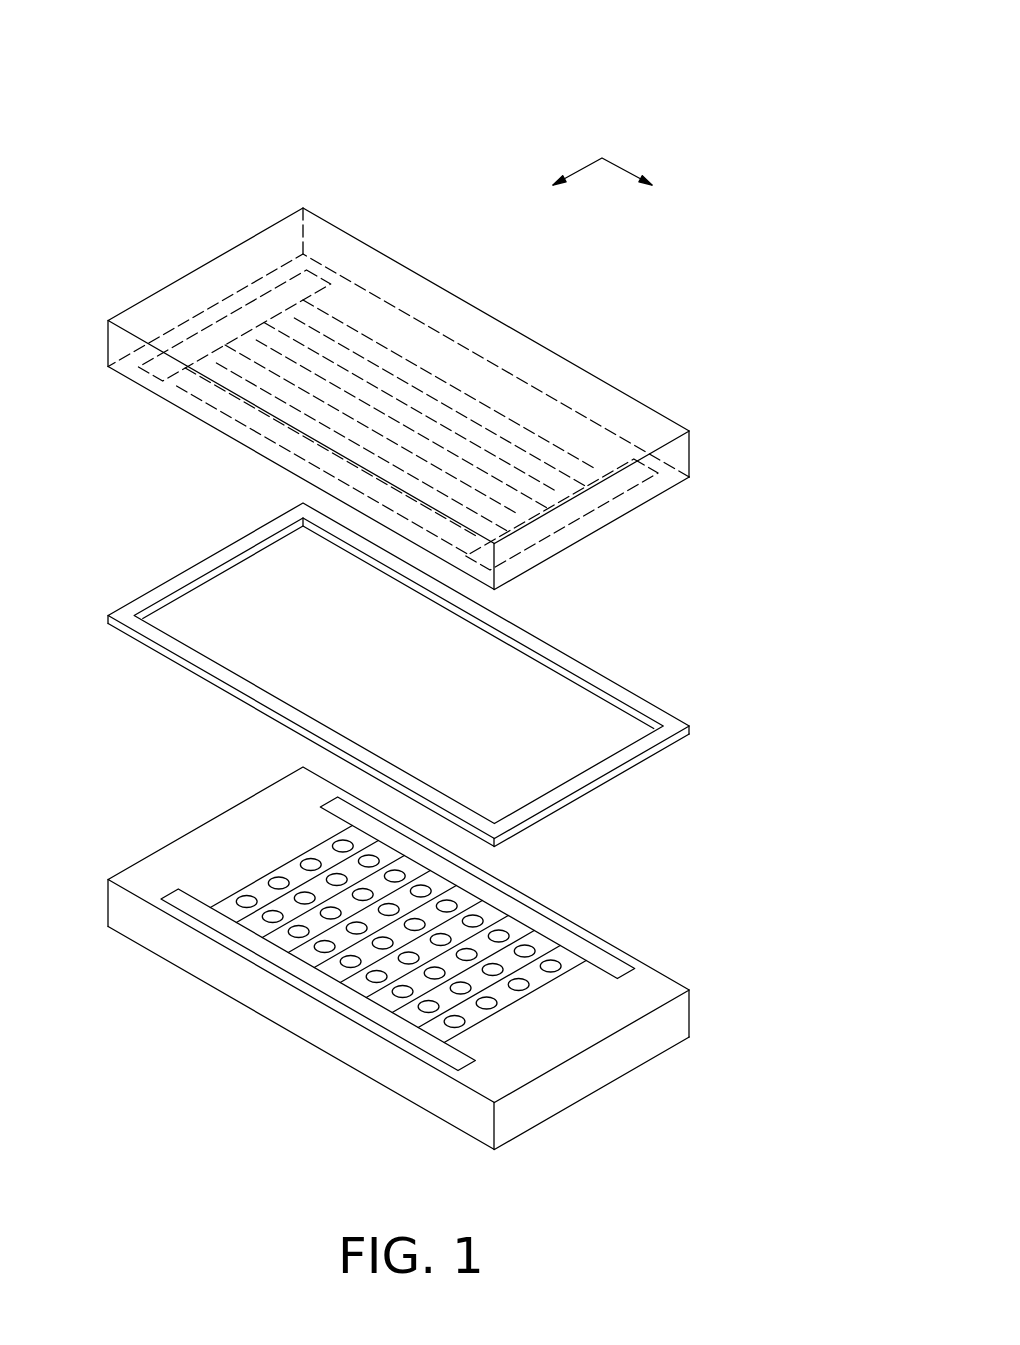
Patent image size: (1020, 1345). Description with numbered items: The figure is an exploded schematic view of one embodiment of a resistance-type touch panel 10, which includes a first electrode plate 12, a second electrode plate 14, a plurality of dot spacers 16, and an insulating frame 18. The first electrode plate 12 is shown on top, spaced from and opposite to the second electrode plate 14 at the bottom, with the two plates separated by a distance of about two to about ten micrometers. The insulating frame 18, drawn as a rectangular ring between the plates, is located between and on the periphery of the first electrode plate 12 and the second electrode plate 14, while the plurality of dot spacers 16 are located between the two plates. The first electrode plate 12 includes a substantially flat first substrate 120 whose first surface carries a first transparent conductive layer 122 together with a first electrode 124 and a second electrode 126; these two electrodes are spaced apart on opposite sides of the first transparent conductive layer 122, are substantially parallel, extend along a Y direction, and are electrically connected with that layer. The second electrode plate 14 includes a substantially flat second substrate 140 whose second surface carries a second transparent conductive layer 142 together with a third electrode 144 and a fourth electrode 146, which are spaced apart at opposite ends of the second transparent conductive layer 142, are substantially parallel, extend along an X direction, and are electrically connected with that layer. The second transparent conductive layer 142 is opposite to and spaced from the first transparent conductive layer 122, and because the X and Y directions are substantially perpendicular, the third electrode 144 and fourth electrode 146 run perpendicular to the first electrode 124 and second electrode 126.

The resistance-type touch panel 10 is at (436, 595).
The first electrode plate 12 is at (449, 396).
The first substrate 120 is at (694, 457).
The first transparent conductive layer 122 is at (400, 325).
The first electrode 124 is at (247, 313).
The second electrode 126 is at (581, 531).
The insulating frame 18 is at (600, 690).
The second electrode plate 14 is at (385, 972).
The second substrate 140 is at (128, 923).
The second transparent conductive layer 142 is at (280, 870).
The third electrode 144 is at (524, 918).
The fourth electrode 146 is at (240, 933).
The dot spacers 16 is at (548, 965).